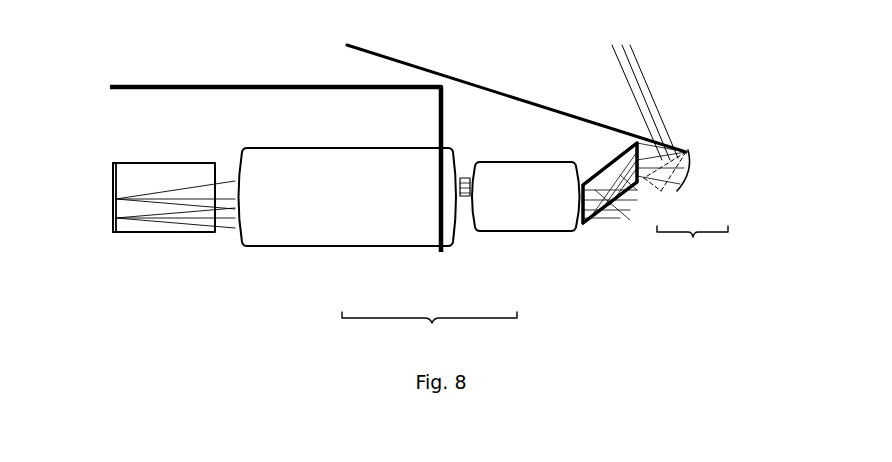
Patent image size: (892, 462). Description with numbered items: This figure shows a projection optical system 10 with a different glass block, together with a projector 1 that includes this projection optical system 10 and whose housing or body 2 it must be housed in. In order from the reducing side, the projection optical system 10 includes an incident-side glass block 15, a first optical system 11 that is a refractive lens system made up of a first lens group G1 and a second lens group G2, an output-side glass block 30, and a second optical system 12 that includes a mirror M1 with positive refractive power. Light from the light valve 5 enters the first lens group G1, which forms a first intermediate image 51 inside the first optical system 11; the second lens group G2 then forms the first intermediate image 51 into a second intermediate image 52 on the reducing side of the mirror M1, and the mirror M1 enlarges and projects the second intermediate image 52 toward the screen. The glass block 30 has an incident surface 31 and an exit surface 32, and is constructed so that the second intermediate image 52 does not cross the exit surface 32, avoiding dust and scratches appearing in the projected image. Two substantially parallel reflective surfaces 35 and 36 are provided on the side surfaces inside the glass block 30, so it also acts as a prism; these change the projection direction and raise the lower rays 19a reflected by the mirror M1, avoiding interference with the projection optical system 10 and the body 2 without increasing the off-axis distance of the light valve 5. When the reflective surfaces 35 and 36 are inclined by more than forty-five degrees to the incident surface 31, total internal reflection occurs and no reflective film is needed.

The projector 1 is at (686, 96).
The housing (body) 2 is at (218, 87).
The light valve 5 is at (115, 205).
The projection optical system 10 is at (652, 287).
The first optical system 11 is at (429, 330).
The second optical system 12 is at (692, 242).
The incident-side glass block 15 is at (163, 232).
The lower rays 19a is at (474, 86).
The output-side glass block 30 is at (602, 218).
The incident surface 31 is at (586, 226).
The exit surface 32 is at (638, 182).
The reflective surface 35 is at (608, 160).
The reflective surface 36 is at (636, 190).
The first intermediate image 51 is at (470, 174).
The second intermediate image 52 is at (690, 152).
The first lens group G1 is at (383, 222).
The second lens group G2 is at (527, 223).
The first reflective surface M1 is at (667, 186).